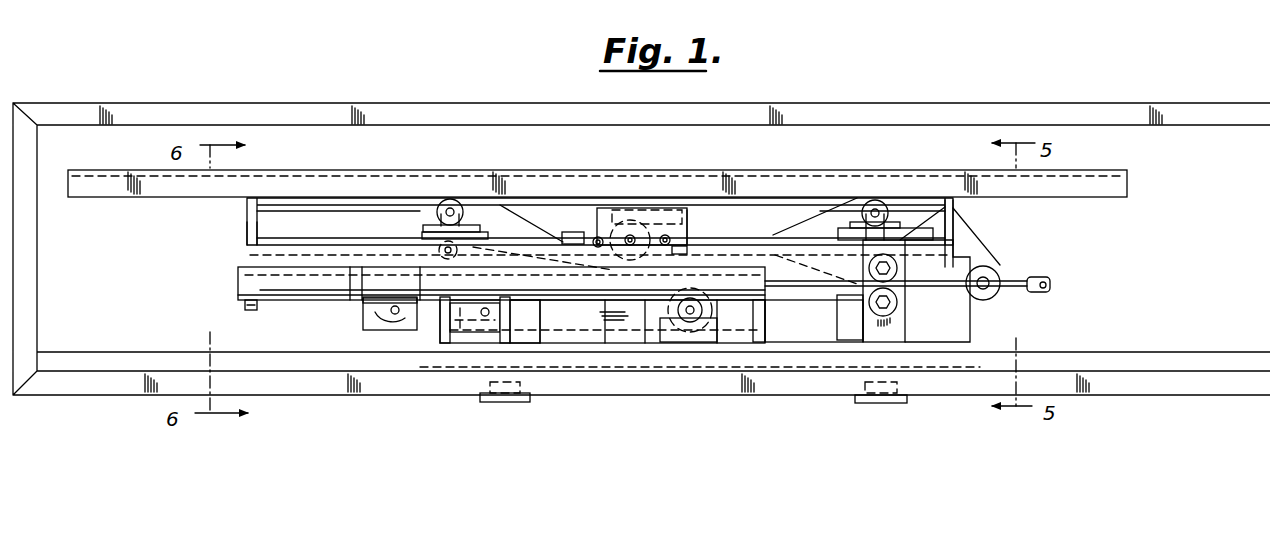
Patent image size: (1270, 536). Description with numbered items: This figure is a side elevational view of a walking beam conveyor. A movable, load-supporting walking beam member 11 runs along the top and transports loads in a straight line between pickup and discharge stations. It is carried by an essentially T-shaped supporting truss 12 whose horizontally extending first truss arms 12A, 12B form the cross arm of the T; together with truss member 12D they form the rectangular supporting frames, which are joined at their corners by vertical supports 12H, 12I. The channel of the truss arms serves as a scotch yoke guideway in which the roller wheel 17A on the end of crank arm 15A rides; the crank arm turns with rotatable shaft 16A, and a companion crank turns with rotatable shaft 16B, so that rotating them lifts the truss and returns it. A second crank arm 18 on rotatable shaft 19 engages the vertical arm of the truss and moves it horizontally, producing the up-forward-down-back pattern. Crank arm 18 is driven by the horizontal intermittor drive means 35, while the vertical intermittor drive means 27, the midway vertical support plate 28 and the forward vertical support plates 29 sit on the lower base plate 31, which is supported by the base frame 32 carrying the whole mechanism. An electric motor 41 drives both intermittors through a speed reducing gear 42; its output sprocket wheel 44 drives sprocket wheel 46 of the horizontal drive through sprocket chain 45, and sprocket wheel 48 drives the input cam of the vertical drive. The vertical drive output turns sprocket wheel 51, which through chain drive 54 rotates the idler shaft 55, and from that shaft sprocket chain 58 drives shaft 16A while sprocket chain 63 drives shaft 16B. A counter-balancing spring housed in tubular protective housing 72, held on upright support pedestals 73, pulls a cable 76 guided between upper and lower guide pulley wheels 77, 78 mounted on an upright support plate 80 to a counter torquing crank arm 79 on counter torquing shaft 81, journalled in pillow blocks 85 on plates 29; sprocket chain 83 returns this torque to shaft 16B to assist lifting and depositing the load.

The walking beam member 11 is at (320, 169).
The supporting truss 12 is at (244, 222).
The first horizontally extending truss arm 12A is at (347, 243).
The first horizontally extending truss arm 12B is at (764, 250).
The truss member 12D is at (280, 202).
The vertical support 12H is at (245, 236).
The vertical support 12I is at (955, 205).
The crank arm 15A is at (443, 204).
The rotatable shaft 16A is at (452, 208).
The rotatable shaft 16B is at (873, 206).
The roller wheel 17A is at (436, 249).
The crank arm 18 is at (655, 222).
The rotatable shaft 19 is at (688, 252).
The vertical intermittor drive means 27 is at (545, 338).
The midway vertical support plate 28 is at (612, 329).
The forward vertical support plate 29 is at (838, 330).
The lower base plate 31 is at (962, 334).
The base frame 32 is at (1112, 397).
The horizontal intermittor drive means 35 is at (688, 216).
The electric motor 41 is at (240, 275).
The speed reducing gear 42 is at (366, 303).
The sprocket wheel 44 is at (382, 312).
The sprocket chain 45 is at (573, 231).
The sprocket wheel 46 is at (626, 226).
The sprocket wheel 48 is at (455, 335).
The sprocket wheel 51 is at (520, 342).
The chain drive 54 is at (665, 340).
The idler shaft 55 is at (690, 316).
The sprocket chain 58 is at (531, 216).
The sprocket chain 63 is at (795, 230).
The tubular protective housing 72 is at (262, 301).
The upright support pedestal 73 is at (445, 335).
The cable 76 is at (1021, 280).
The upper guide pulley wheel 77 is at (890, 276).
The lower guide pulley wheel 78 is at (893, 308).
The counter torquing crank arm 79 is at (1045, 277).
The upright support plate 80 is at (895, 342).
The counter torquing shaft 81 is at (990, 300).
The sprocket chain 83 is at (920, 222).
The pillow block 85 is at (999, 294).